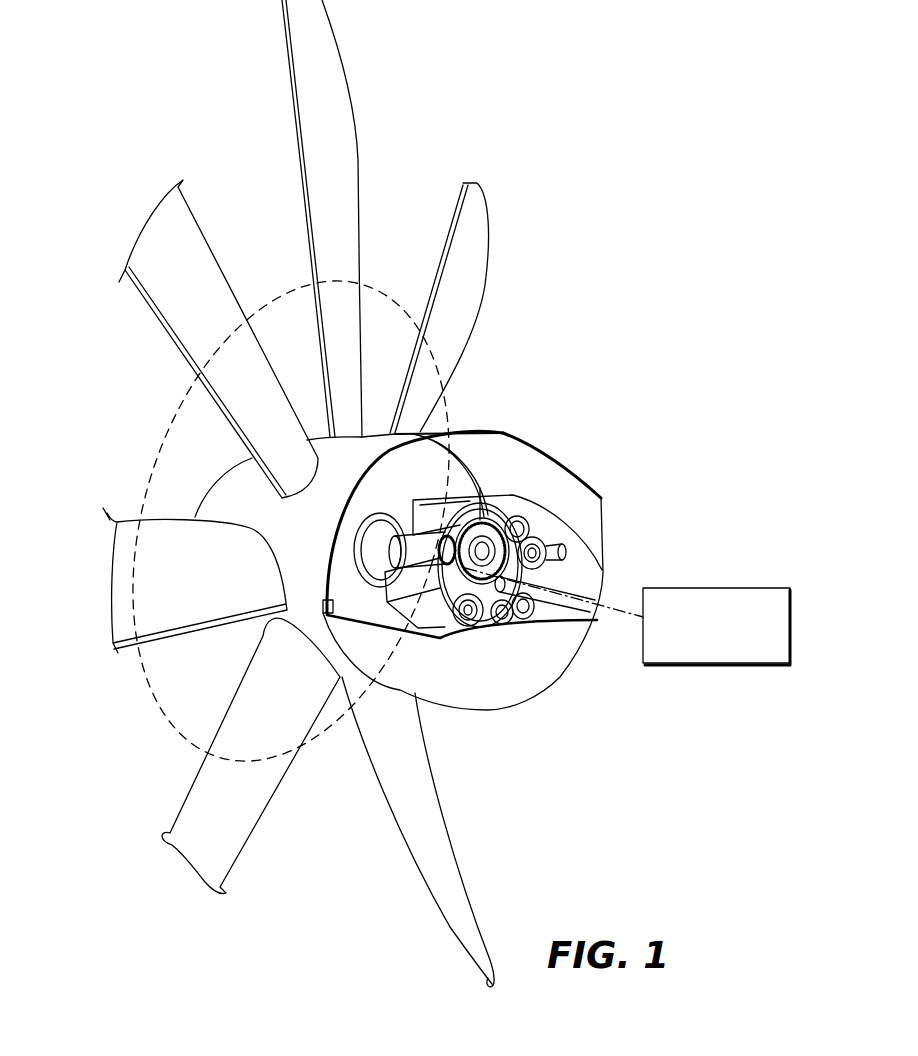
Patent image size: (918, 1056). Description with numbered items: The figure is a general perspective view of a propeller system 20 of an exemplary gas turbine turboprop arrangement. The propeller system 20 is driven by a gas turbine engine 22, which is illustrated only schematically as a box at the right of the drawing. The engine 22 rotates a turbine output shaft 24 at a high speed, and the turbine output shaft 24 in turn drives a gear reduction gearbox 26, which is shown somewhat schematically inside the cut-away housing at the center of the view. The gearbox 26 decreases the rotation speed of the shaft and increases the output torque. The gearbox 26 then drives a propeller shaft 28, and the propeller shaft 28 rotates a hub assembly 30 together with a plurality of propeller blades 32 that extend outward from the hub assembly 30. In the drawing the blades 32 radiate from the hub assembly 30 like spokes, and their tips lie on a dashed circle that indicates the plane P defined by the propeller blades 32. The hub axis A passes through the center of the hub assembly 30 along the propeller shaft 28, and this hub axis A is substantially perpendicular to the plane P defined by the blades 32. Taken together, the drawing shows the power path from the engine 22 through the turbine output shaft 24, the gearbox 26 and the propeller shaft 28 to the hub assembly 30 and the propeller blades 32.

The propeller system 20 is at (392, 493).
The gas turbine engine 22 is at (765, 588).
The turbine output shaft 24 is at (583, 595).
The gear reduction gearbox 26 is at (517, 508).
The propeller shaft 28 is at (400, 563).
The hub assembly 30 is at (299, 540).
The propeller blades 32 is at (343, 86).
The hub axis A is at (408, 545).
The plane P is at (162, 439).